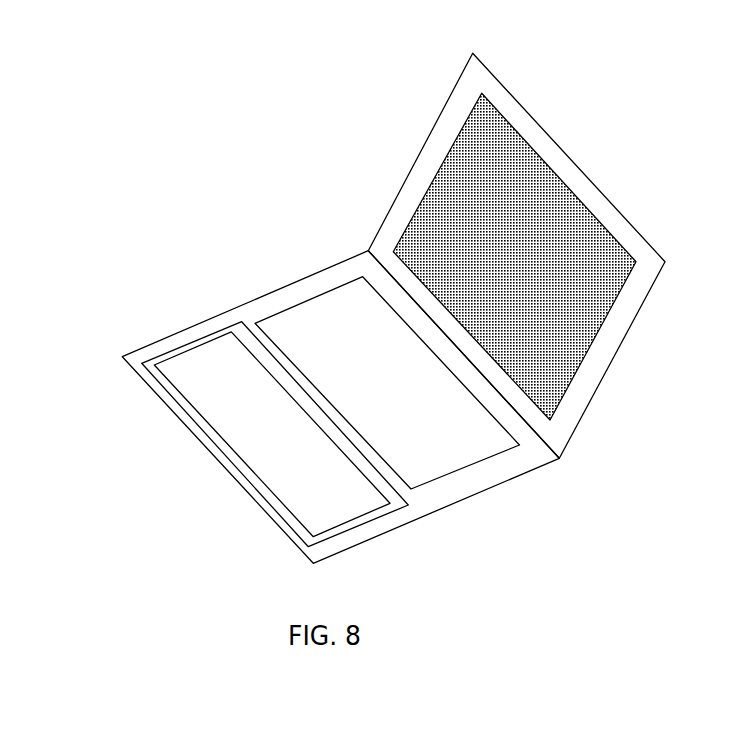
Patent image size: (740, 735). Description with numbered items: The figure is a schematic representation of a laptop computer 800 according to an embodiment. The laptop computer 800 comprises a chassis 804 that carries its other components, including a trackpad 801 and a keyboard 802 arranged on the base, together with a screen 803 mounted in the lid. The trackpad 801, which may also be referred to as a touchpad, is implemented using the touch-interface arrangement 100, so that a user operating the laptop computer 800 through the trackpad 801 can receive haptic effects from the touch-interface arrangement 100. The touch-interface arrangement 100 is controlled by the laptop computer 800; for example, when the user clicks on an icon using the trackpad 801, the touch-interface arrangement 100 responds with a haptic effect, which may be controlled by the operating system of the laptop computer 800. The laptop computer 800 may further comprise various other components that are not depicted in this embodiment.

The laptop computer 800 is at (219, 145).
The touch-interface arrangement 100 is at (181, 400).
The chassis 804 is at (189, 337).
The trackpad 801 is at (247, 448).
The keyboard 802 is at (452, 455).
The screen 803 is at (576, 354).